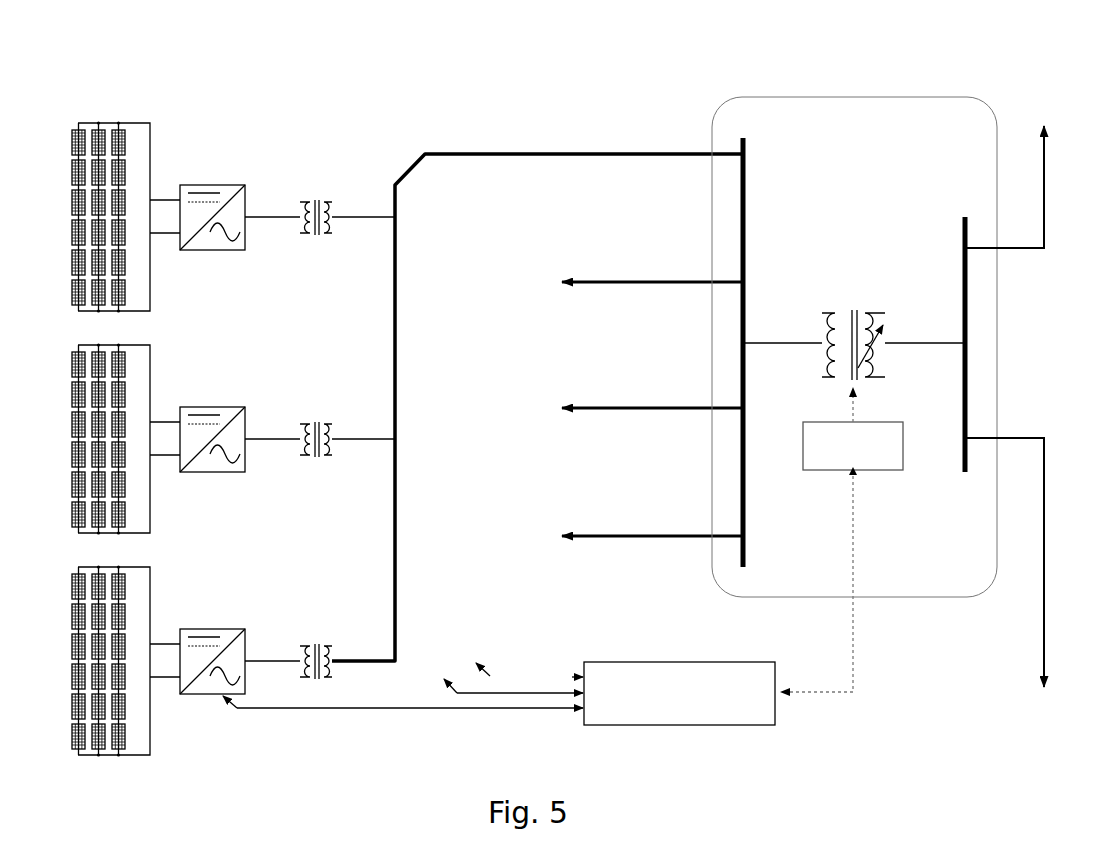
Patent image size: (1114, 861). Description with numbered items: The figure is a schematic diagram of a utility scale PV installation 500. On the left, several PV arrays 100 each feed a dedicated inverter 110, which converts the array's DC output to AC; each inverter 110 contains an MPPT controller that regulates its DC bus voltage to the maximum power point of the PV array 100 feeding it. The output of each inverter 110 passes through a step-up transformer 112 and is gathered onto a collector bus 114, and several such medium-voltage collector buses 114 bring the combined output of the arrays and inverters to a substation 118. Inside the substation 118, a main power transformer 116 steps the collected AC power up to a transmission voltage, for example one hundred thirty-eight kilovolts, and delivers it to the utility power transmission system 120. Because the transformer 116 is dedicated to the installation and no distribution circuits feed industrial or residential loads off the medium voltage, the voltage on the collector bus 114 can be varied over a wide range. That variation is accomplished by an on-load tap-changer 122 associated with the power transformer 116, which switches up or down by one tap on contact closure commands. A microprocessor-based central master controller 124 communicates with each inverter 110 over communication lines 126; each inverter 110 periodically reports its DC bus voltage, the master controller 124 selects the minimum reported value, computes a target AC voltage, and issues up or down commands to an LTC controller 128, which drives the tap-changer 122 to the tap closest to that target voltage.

The utility scale PV installation 500 is at (217, 108).
The PV array 100 is at (117, 438).
The inverter 110 is at (236, 422).
The step-up transformer 112 is at (325, 439).
The collector bus 114 is at (537, 393).
The power transformer 116 is at (854, 312).
The substation 118 is at (838, 163).
The utility power transmission system 120 is at (1019, 445).
The on-load tap-changer 122 is at (868, 347).
The central master controller 124 is at (679, 711).
The communication lines 126 is at (403, 711).
The LTC controller 128 is at (845, 540).